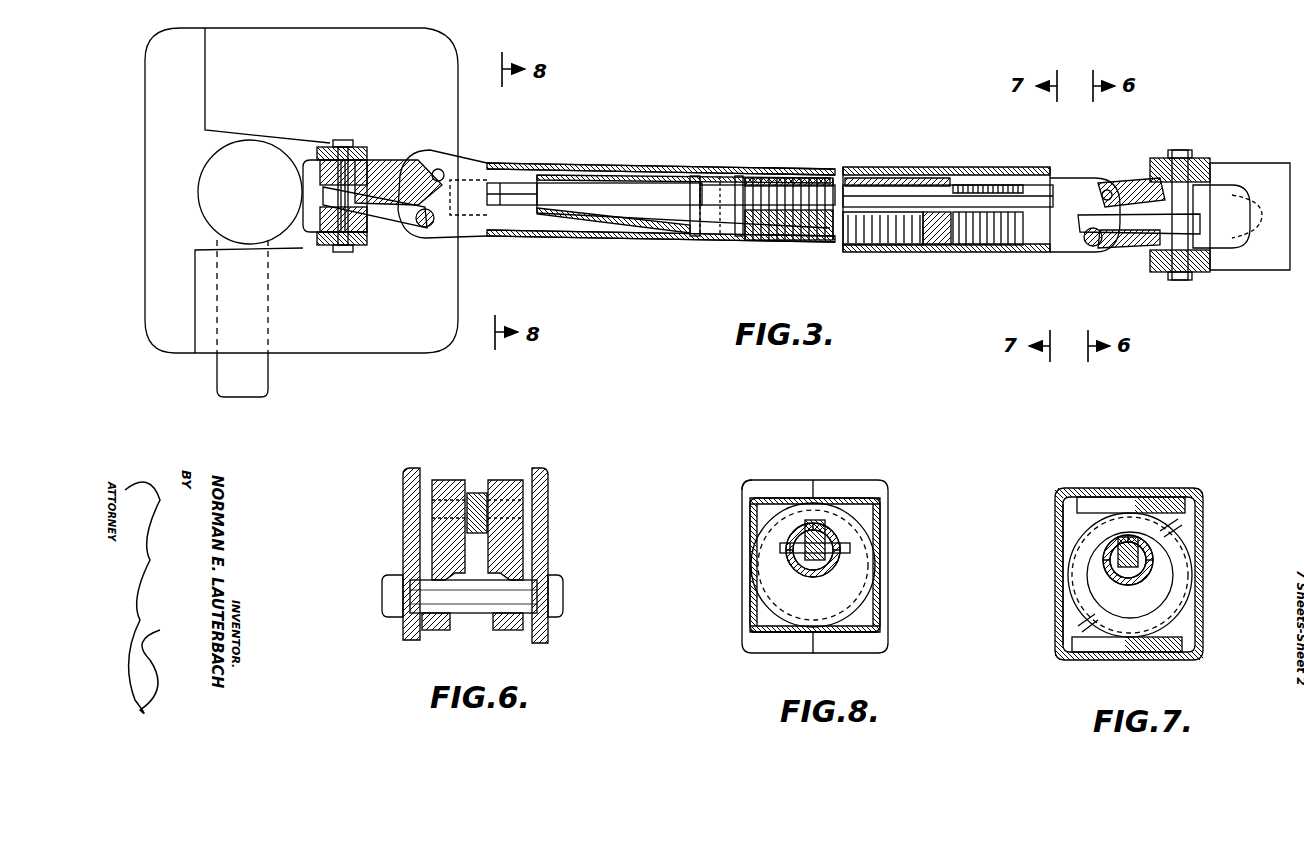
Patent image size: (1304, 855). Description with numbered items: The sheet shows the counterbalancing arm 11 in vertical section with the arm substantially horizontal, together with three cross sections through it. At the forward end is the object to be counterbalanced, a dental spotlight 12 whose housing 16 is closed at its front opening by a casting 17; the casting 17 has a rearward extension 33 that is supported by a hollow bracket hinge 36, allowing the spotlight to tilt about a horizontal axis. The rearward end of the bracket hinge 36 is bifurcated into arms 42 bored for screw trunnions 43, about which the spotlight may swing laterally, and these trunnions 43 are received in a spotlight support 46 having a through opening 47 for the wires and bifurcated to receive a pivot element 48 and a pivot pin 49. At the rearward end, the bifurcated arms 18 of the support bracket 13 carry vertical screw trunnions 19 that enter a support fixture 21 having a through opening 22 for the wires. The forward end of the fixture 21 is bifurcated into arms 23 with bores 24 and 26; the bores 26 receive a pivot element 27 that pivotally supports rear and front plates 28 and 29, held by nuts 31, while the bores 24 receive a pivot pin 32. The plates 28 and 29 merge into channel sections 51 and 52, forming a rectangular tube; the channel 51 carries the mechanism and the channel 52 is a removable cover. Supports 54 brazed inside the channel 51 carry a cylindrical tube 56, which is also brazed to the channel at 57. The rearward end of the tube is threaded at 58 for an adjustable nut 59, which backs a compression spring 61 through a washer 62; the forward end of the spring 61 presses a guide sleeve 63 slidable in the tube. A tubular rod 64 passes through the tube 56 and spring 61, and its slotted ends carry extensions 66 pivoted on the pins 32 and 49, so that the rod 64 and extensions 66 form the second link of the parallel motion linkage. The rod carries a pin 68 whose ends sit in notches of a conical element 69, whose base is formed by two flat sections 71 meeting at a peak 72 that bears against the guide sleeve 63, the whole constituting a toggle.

In FIG. 3, the counterbalancing arm 11 is at (822, 130).
In FIG. 3, the dental lighting unit or spotlight 12 is at (504, 284).
In FIG. 3, the support arm or bracket 13 is at (1179, 304).
In FIG. 3, the housing 16 is at (318, 355).
In FIG. 3, the casting 17 is at (145, 191).
In FIG. 3, the arms 18 is at (1218, 168).
In FIG. 3, the screw trunnions 19 is at (1170, 160).
In FIG. 3, the support fixture 21 is at (1142, 183).
In FIG. 3, the through opening 22 is at (1180, 216).
In FIG. 6, the arms 23 is at (445, 480).
In FIG. 6, the bores 24 is at (515, 490).
In FIG. 6, the bores 26 is at (505, 630).
In FIG. 3, the pivot element 27 is at (1088, 247).
In FIG. 6, the pivot element 27 is at (475, 603).
In FIG. 6, the plate 28 is at (403, 538).
In FIG. 6, the plate 29 is at (548, 545).
In FIG. 6, the nuts 31 is at (390, 615).
In FIG. 3, the pivot pin 32 is at (1106, 188).
In FIG. 3, the rearward extension 33 is at (228, 243).
In FIG. 3, the bracket hinge 36 is at (228, 160).
In FIG. 3, the arms 42 is at (322, 147).
In FIG. 3, the screw trunnions 43 is at (350, 142).
In FIG. 3, the spotlight support 46 is at (372, 230).
In FIG. 3, the through opening 47 is at (352, 193).
In FIG. 3, the pivot element 48 is at (428, 228).
In FIG. 3, the pivot pin 49 is at (441, 170).
In FIG. 8, the channel section 51 is at (742, 567).
In FIG. 7, the channel section 51 is at (1203, 568).
In FIG. 8, the channel section 52 is at (888, 573).
In FIG. 7, the channel section 52 is at (1063, 580).
In FIG. 3, the supports 54 is at (1008, 170).
In FIG. 7, the supports 54 is at (1105, 501).
In FIG. 3, the cylindrical tube 56 is at (886, 245).
In FIG. 7, the cylindrical tube 56 is at (1178, 535).
In FIG. 3, the brazed joint 57 is at (505, 237).
In FIG. 3, the threaded end 58 is at (972, 246).
In FIG. 3, the adjustable nut 59 is at (937, 245).
In FIG. 7, the adjustable nut 59 is at (1170, 610).
In FIG. 3, the spring 61 is at (793, 240).
In FIG. 3, the washer 62 is at (922, 246).
In FIG. 3, the guide sleeve 63 is at (705, 237).
In FIG. 3, the tubular rod 64 is at (617, 190).
In FIG. 8, the tubular rod 64 is at (797, 572).
In FIG. 7, the tubular rod 64 is at (1135, 578).
In FIG. 3, the extensions 66 is at (468, 186).
In FIG. 6, the extensions 66 is at (477, 493).
In FIG. 8, the extensions 66 is at (818, 520).
In FIG. 7, the extensions 66 is at (1118, 562).
In FIG. 3, the pin 68 is at (540, 194).
In FIG. 8, the pin 68 is at (848, 560).
In FIG. 3, the conical element 69 is at (614, 226).
In FIG. 8, the conical element 69 is at (775, 525).
In FIG. 3, the flat sections 71 is at (678, 178).
In FIG. 3, the peak 72 is at (695, 183).